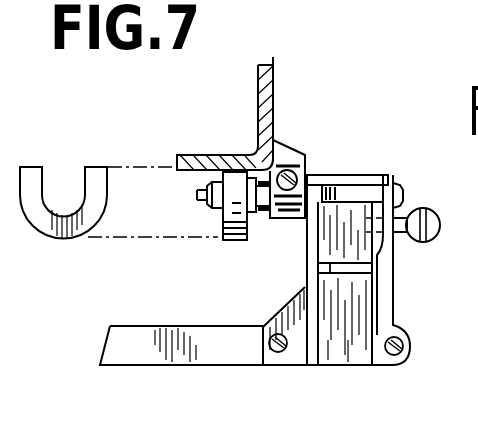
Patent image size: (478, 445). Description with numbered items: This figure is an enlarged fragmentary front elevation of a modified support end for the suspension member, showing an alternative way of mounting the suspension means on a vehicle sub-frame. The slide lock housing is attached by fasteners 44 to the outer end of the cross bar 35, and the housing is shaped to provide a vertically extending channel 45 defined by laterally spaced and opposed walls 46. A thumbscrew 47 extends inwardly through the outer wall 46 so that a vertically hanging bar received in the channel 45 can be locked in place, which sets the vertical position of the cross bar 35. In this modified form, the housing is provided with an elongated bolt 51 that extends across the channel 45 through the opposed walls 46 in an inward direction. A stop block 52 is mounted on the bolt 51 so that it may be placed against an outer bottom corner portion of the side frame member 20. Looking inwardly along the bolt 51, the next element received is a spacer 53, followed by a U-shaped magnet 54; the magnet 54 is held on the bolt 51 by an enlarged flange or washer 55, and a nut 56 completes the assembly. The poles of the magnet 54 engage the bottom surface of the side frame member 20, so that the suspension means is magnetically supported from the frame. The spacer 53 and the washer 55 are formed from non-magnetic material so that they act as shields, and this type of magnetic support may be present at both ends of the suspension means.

The side frame member 20 is at (275, 110).
The cross bar 35 is at (205, 367).
The fasteners 44 is at (276, 334).
The channel 45 is at (327, 357).
The walls 46 is at (378, 302).
The thumbscrew 47 is at (432, 212).
The elongated bolt 51 is at (345, 185).
The stop block 52 is at (291, 152).
The spacer 53 is at (256, 214).
The U-shaped magnet 54 is at (75, 240).
The washer 55 is at (206, 205).
The nut 56 is at (207, 194).